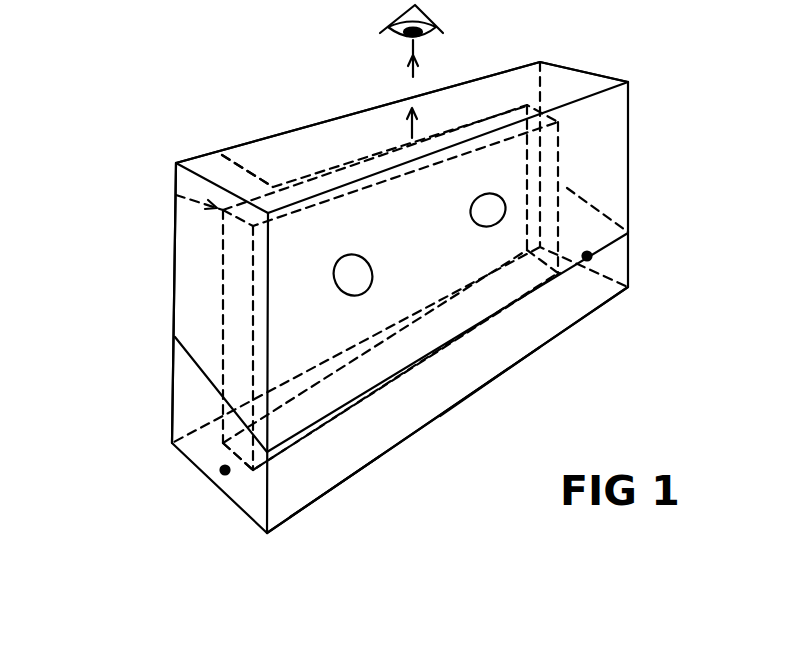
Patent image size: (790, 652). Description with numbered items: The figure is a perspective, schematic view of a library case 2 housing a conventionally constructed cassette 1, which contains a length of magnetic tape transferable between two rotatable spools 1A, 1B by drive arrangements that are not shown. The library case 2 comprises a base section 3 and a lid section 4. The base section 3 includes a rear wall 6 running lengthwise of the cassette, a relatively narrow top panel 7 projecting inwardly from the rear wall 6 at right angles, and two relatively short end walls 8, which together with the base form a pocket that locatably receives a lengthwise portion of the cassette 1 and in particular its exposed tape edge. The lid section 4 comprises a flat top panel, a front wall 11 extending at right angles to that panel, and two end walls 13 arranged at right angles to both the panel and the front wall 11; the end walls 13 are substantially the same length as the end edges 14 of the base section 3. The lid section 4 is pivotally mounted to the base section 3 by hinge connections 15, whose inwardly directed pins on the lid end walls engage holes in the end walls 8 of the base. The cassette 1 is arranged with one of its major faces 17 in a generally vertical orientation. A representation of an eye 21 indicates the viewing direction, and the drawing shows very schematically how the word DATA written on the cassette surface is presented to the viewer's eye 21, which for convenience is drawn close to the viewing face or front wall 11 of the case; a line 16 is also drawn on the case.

The cassette 1 is at (176, 194).
The rotatable spool 1A is at (327, 278).
The rotatable spool 1B is at (460, 212).
The library case 2 is at (652, 203).
The base section 3 is at (438, 433).
The lid section 4 is at (307, 114).
The rear wall 6 is at (485, 366).
The top panel 7 is at (329, 470).
The end wall 8 is at (230, 494).
The front wall 11 is at (573, 77).
The end wall 13 is at (240, 348).
The end edge 14 is at (161, 277).
The hinge connection 15 is at (210, 475).
The fold line 16 is at (196, 370).
The major face 17 is at (222, 150).
The eye 21 is at (372, 10).